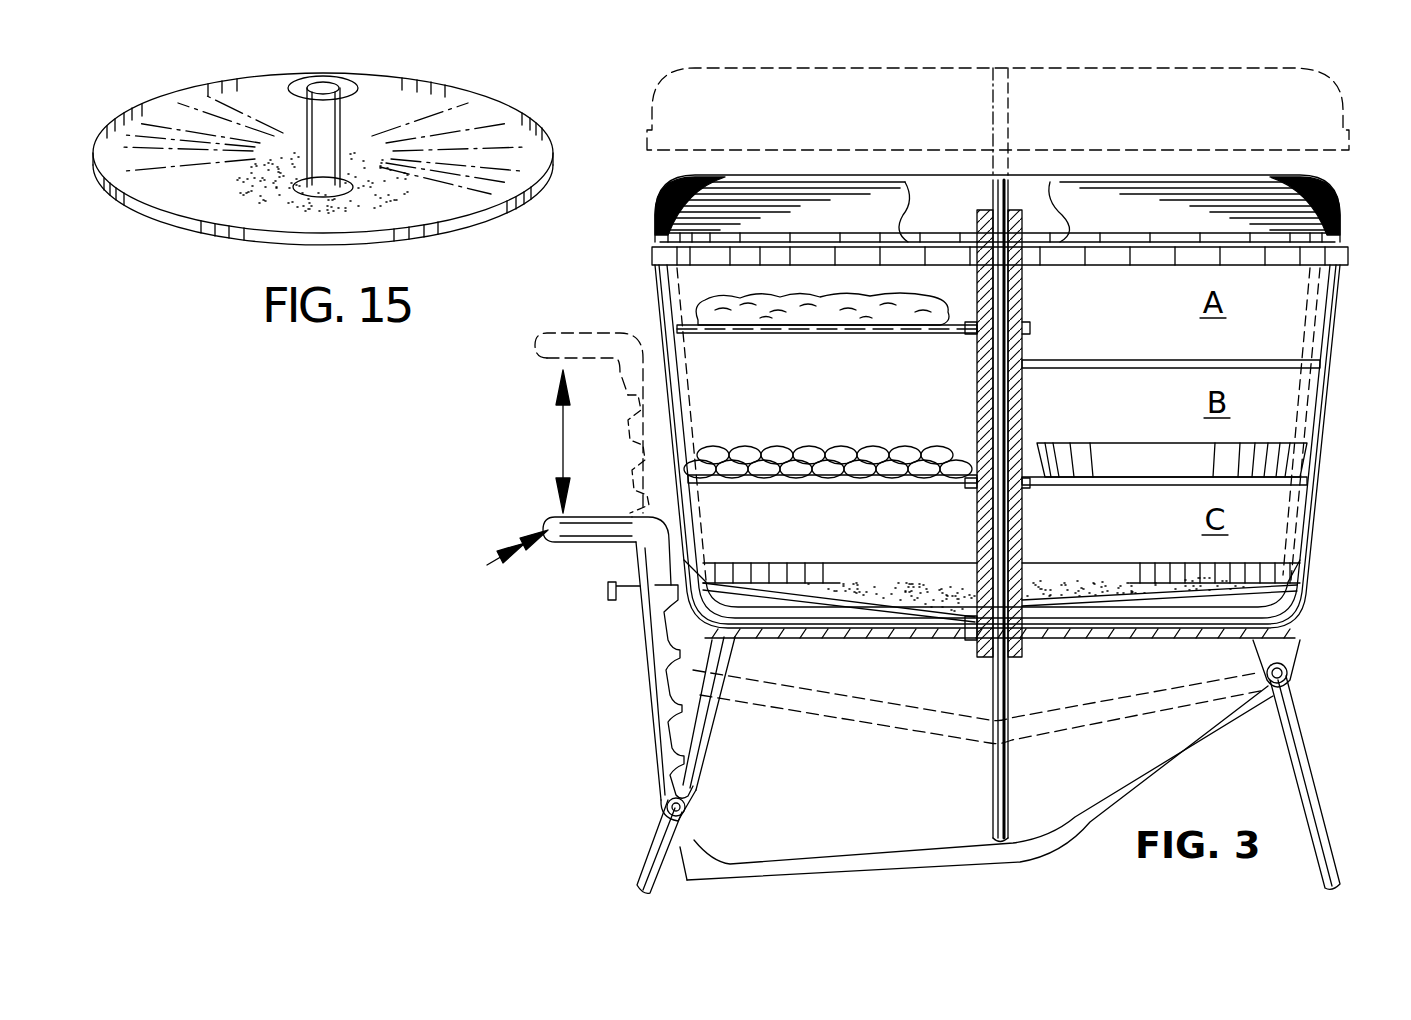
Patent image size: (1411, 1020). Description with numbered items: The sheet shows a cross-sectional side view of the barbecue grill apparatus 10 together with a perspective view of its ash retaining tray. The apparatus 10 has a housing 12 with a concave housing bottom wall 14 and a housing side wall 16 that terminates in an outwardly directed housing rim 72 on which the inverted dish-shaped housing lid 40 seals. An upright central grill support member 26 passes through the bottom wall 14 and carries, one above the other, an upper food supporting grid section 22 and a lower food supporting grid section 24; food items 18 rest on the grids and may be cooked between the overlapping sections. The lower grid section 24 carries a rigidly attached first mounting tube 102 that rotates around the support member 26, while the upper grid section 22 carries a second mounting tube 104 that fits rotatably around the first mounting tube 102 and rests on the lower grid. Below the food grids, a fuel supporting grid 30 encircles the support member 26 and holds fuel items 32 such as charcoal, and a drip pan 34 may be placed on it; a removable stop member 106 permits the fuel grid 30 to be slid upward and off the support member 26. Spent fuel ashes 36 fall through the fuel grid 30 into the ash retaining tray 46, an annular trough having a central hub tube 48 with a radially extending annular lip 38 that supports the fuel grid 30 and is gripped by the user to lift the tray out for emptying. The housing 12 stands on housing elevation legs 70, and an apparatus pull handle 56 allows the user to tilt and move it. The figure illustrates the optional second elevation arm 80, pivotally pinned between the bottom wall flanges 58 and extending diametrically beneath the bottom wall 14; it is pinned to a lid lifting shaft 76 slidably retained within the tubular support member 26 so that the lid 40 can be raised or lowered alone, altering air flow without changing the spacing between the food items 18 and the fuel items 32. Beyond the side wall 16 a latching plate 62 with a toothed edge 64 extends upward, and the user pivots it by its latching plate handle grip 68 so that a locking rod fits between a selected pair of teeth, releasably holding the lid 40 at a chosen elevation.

In FIG. 3, the barbecue grill apparatus 10 is at (985, 417).
In FIG. 3, the housing 12 is at (655, 318).
In FIG. 3, the housing bottom wall 14 is at (858, 637).
In FIG. 3, the housing side wall 16 is at (1340, 314).
In FIG. 3, the food items 18 is at (893, 310).
In FIG. 3, the upper food supporting grid section 22 is at (808, 333).
In FIG. 3, the lower food supporting grid section 24 is at (1178, 368).
In FIG. 3, the grill support member 26 is at (1022, 380).
In FIG. 3, the fuel supporting grid 30 is at (817, 484).
In FIG. 3, the fuel items 32 is at (852, 450).
In FIG. 3, the drip pan 34 is at (1160, 448).
In FIG. 15, the spent fuel ashes 36 is at (360, 173).
In FIG. 3, the spent fuel ashes 36 is at (886, 585).
In FIG. 15, the annular lip 38 is at (340, 80).
In FIG. 3, the annular lip 38 is at (968, 488).
In FIG. 3, the housing lid 40 is at (1085, 70).
In FIG. 15, the ash retaining tray 46 is at (470, 82).
In FIG. 3, the ash retaining tray 46 is at (1143, 578).
In FIG. 15, the central hub tube 48 is at (306, 125).
In FIG. 3, the central hub tube 48 is at (1022, 520).
In FIG. 3, the apparatus pull handle 56 is at (608, 592).
In FIG. 3, the bottom wall flanges 58 is at (1300, 648).
In FIG. 3, the latching plate 62 is at (660, 708).
In FIG. 3, the toothed edge 64 is at (655, 640).
In FIG. 3, the latching plate handle grip 68 is at (572, 333).
In FIG. 3, the housing elevation legs 70 is at (650, 850).
In FIG. 3, the housing rim 72 is at (1050, 240).
In FIG. 3, the lid lifting shaft 76 is at (1010, 108).
In FIG. 3, the second elevation arm 80 is at (860, 725).
In FIG. 3, the first mounting tube 102 is at (1022, 362).
In FIG. 3, the second mounting tube 104 is at (1022, 296).
In FIG. 3, the stop member 106 is at (968, 345).